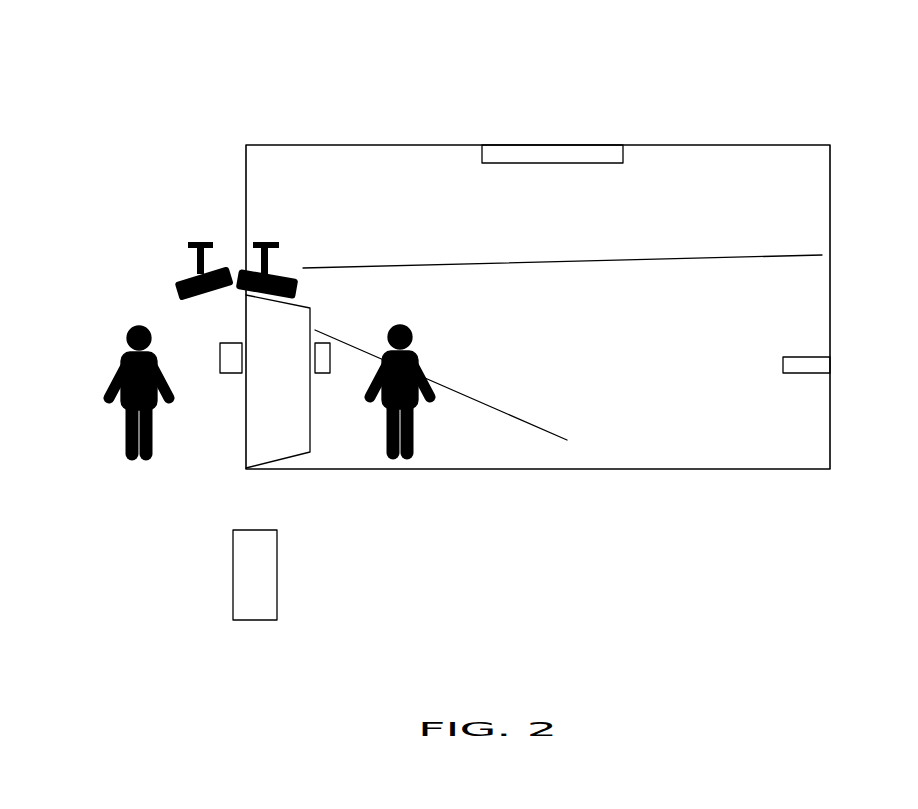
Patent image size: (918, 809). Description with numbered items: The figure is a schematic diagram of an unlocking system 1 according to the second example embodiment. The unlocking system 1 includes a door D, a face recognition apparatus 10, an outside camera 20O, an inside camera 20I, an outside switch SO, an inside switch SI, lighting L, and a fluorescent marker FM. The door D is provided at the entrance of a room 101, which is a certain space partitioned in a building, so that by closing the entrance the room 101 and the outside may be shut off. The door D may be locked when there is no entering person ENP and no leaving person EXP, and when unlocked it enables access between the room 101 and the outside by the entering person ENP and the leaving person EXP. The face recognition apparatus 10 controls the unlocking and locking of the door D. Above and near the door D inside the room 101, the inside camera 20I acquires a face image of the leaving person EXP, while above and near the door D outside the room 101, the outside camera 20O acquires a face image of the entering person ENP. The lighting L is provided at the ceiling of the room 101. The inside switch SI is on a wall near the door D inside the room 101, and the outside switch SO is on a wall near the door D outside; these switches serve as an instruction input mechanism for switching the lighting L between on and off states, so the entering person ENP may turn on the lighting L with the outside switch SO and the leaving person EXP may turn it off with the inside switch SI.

The unlocking system 1 is at (465, 57).
The room 101 is at (350, 145).
The lighting L is at (555, 153).
The fluorescent marker FM is at (788, 352).
The door D is at (280, 455).
The outside camera 20O is at (192, 242).
The inside camera 20I is at (275, 242).
The outside switch SO is at (235, 373).
The inside switch SI is at (323, 373).
The entering person ENP is at (136, 326).
The leaving person EXP is at (437, 384).
The face recognition apparatus 10 is at (282, 553).